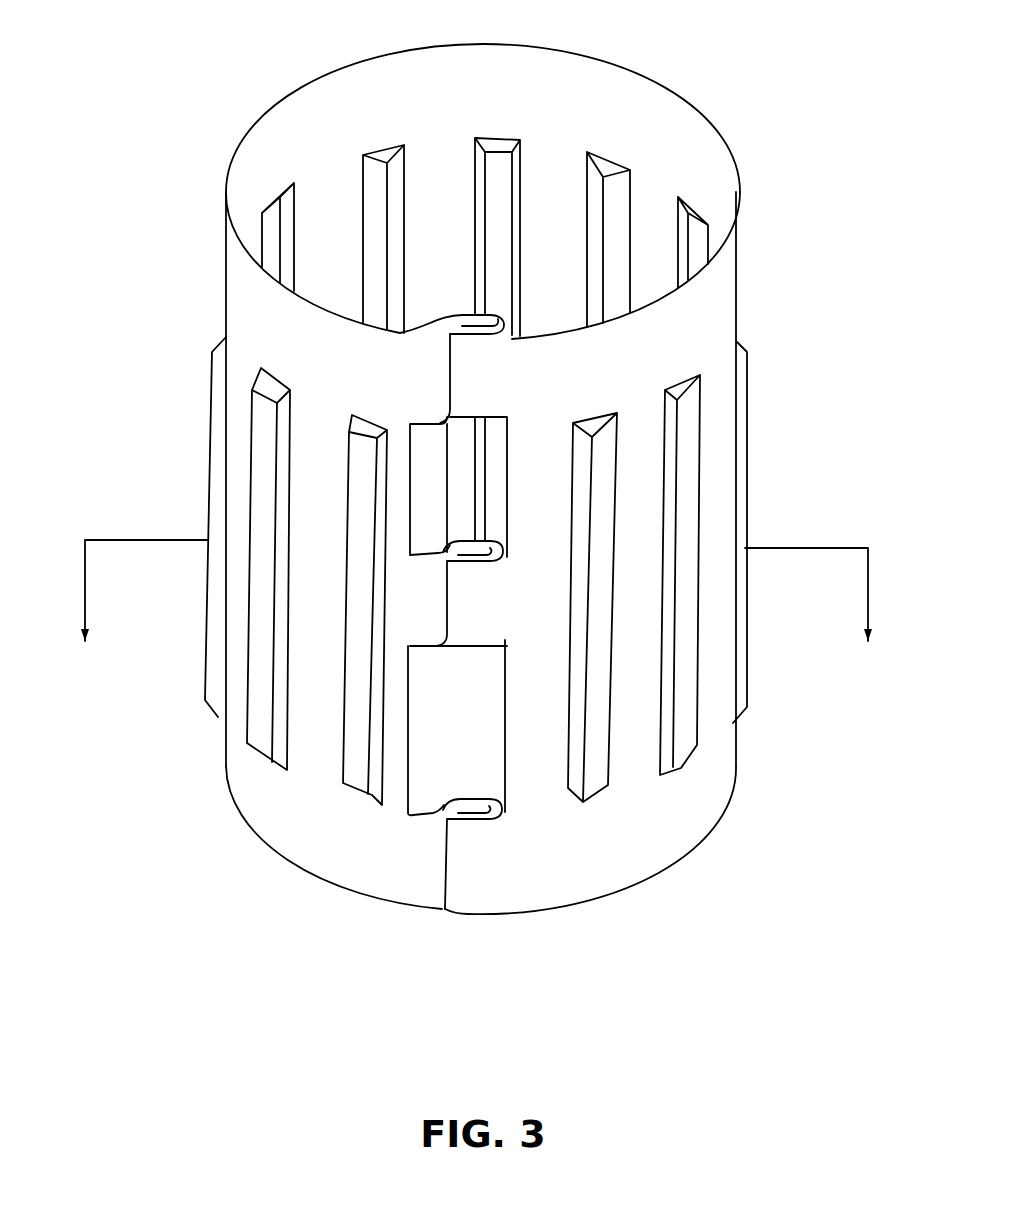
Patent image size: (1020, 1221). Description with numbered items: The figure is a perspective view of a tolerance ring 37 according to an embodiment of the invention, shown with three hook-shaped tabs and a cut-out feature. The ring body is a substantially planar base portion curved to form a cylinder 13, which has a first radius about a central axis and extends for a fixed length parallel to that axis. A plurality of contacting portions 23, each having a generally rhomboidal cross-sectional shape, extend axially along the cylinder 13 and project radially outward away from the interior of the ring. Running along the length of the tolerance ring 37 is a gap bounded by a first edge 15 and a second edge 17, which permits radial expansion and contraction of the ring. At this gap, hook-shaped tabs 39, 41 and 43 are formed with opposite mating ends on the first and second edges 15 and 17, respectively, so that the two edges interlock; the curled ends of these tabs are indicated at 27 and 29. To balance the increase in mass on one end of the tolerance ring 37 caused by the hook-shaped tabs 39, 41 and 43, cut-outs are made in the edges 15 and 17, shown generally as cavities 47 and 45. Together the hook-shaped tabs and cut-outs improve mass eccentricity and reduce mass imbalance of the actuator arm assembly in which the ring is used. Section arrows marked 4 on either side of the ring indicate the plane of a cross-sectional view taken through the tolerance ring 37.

The cylinder 13 is at (715, 517).
The first edge 15 is at (380, 862).
The second edge 17 is at (555, 882).
The contacting portions 23 is at (690, 427).
The curled tab end 27 is at (446, 334).
The curl 29 is at (463, 355).
The tolerance ring 37 is at (764, 99).
The hook-shaped tab 39 is at (473, 865).
The hook-shaped tab 41 is at (488, 600).
The hook-shaped tab 43 is at (479, 380).
The cavity 45 is at (443, 452).
The cavity 47 is at (478, 764).
The section line 4- 4 is at (477, 610).